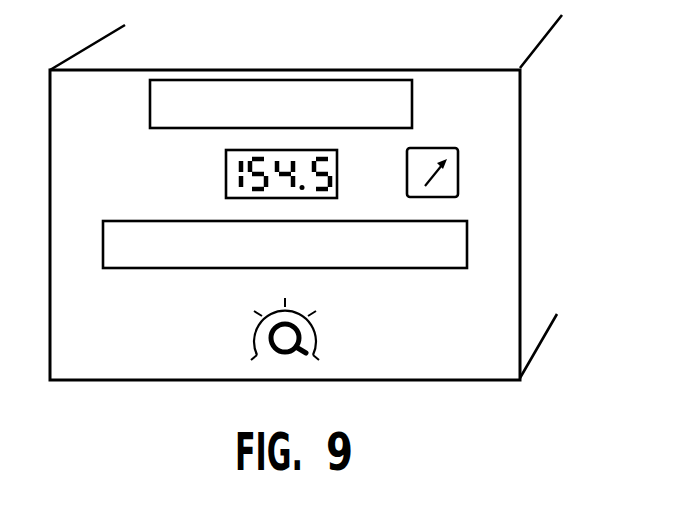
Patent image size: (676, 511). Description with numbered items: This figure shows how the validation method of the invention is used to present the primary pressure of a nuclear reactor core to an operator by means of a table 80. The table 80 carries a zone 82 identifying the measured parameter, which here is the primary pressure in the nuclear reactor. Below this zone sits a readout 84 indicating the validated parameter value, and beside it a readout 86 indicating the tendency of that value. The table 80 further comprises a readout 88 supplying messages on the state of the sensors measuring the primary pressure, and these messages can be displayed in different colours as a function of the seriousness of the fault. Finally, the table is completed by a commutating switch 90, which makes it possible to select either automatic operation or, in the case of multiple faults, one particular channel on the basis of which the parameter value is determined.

The table 80 is at (62, 96).
The zone identifying the measured parameter 82 is at (172, 86).
The readout indicating the validated parameter value 84 is at (224, 172).
The readout indicating the tendency 86 is at (456, 182).
The readout supplying messages on the state of the sensors 88 is at (150, 266).
The commutating switch 90 is at (347, 331).